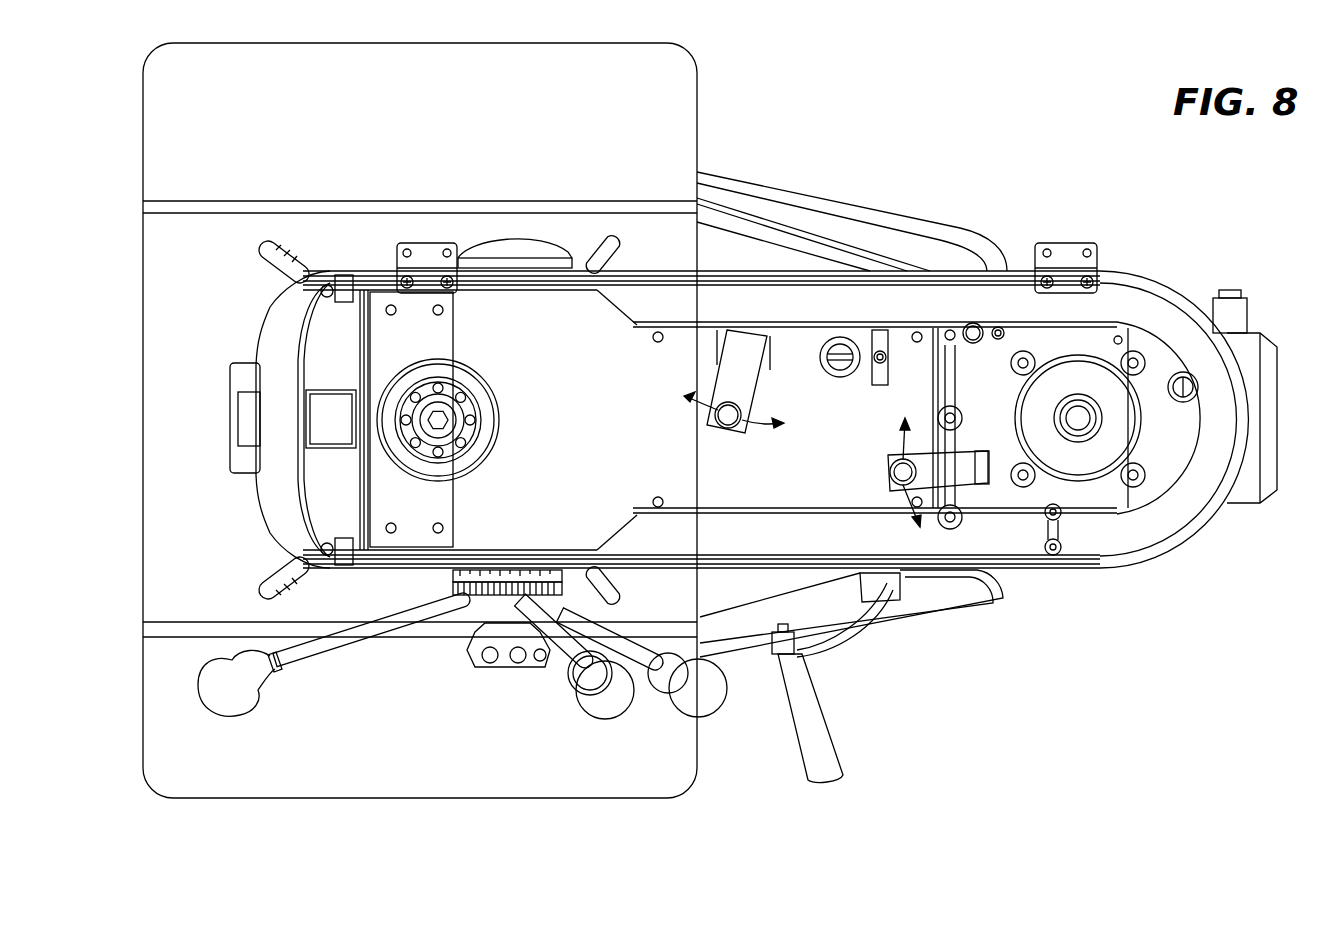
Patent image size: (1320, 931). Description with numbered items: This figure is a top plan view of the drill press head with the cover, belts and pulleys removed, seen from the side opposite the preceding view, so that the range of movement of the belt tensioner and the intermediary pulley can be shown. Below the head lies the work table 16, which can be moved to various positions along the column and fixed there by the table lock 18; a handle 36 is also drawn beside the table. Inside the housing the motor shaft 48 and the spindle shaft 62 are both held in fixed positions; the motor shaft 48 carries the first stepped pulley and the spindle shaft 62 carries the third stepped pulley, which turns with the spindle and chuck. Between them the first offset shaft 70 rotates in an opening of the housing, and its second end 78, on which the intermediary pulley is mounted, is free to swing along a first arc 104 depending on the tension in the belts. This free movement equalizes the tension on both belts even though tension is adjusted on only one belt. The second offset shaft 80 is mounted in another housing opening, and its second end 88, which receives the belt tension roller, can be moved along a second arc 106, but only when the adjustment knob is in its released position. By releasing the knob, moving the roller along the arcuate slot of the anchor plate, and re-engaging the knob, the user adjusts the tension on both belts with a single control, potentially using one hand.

The work table 16 is at (512, 798).
The table lock 18 is at (750, 660).
The handle 36 is at (336, 660).
The motor shaft 48 is at (1077, 417).
The spindle shaft 62 is at (442, 416).
The first offset shaft 70 is at (743, 385).
The second end 78 is at (712, 438).
The second offset shaft 80 is at (977, 478).
The second end 88 is at (902, 487).
The first arc 104 is at (757, 426).
The second arc 106 is at (890, 446).